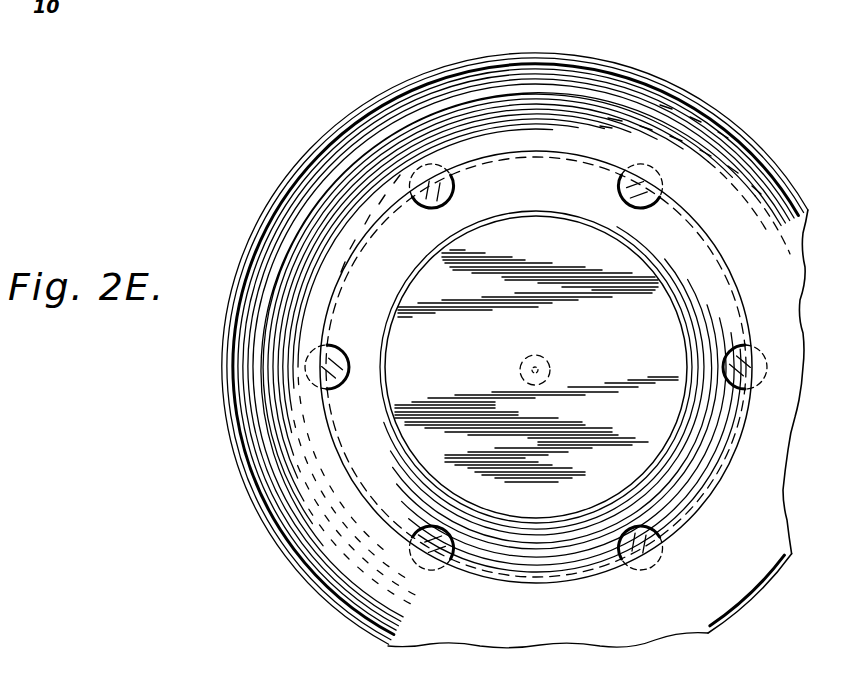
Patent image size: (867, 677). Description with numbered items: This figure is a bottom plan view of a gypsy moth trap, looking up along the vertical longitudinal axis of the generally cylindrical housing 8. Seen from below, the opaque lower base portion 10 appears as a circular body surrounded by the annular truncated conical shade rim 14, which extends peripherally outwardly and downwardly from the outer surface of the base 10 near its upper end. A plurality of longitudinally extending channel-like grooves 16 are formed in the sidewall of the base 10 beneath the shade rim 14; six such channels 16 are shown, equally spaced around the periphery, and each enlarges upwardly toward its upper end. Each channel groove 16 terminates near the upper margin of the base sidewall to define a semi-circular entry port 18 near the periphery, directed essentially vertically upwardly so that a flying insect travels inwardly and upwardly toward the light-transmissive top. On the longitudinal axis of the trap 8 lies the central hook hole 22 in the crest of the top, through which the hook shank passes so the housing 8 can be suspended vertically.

The housing 8 is at (776, 126).
The base portion 10 is at (255, 540).
The shade rim 14 is at (527, 62).
The channel-like grooves 16 is at (614, 193).
The entry port 18 is at (653, 196).
The hook hole 22 is at (546, 358).